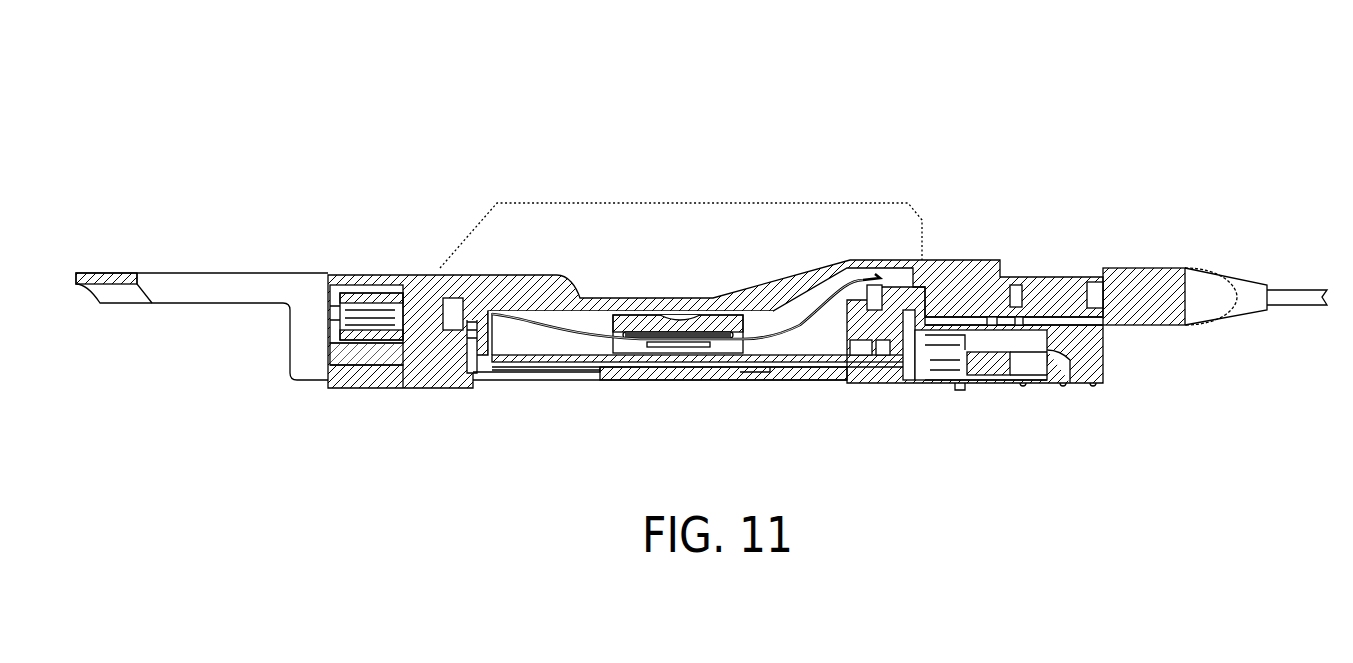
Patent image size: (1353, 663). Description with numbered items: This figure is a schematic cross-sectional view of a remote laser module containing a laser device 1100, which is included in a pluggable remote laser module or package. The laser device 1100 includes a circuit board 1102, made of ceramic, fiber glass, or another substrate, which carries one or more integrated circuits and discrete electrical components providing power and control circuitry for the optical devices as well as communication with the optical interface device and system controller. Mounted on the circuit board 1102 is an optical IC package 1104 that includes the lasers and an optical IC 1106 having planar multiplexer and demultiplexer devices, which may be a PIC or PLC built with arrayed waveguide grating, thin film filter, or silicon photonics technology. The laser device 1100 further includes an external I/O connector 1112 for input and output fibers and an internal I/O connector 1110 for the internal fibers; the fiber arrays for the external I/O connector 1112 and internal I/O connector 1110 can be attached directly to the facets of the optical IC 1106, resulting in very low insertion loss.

The laser device 1100 is at (392, 72).
The circuit board 1102 is at (818, 360).
The optical IC package 1104 is at (617, 318).
The optical IC 1106 is at (683, 340).
The internal I/O connector 1110 is at (1140, 288).
The external I/O connector 1112 is at (355, 290).